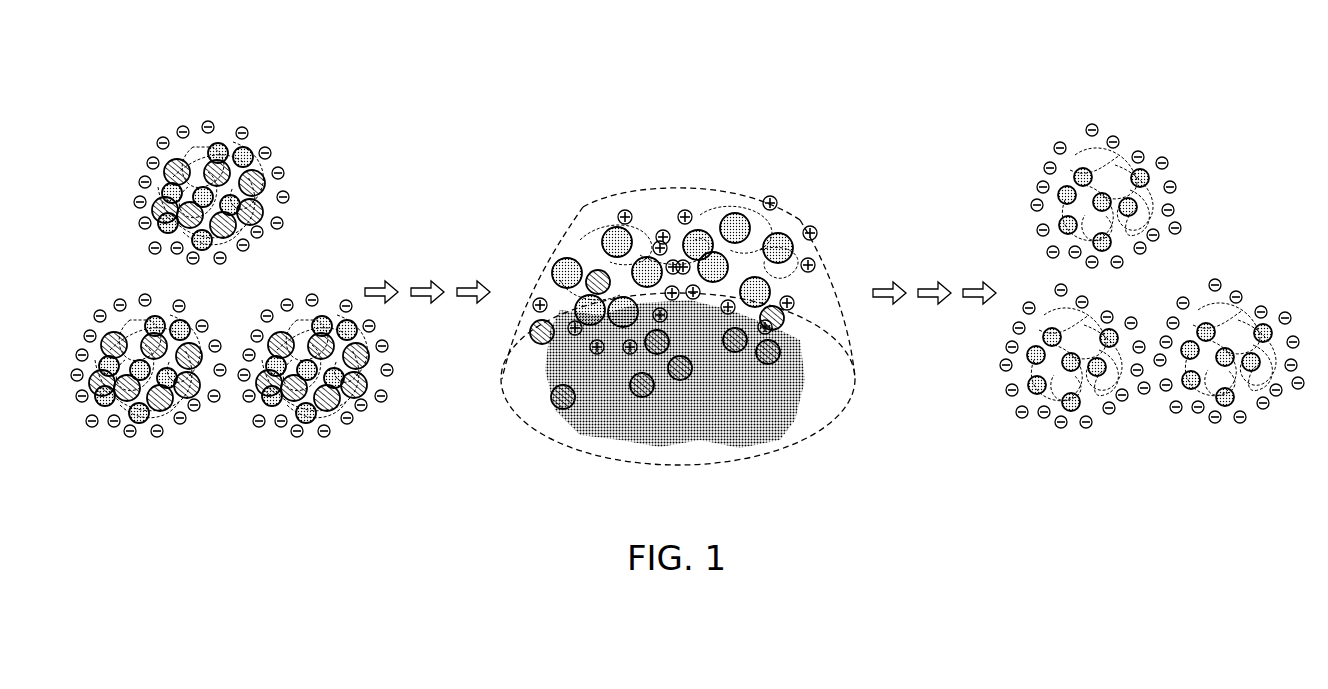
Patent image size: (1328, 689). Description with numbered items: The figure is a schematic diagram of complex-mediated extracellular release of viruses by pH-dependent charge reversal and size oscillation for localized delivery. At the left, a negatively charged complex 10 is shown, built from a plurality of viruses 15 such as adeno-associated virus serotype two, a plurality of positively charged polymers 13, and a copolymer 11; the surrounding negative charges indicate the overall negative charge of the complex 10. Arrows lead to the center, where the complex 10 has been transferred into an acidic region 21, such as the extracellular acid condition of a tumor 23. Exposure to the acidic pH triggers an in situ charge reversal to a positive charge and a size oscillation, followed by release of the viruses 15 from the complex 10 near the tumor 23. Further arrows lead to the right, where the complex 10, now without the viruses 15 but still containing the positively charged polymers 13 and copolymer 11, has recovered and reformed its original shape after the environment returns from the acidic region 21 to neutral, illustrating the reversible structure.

The negatively charged complex 10 is at (248, 103).
The copolymer 11 is at (210, 163).
The positively charged polymer 13 is at (224, 174).
The virus 15 is at (229, 219).
The acidic region 21 is at (672, 190).
The tumor 23 is at (783, 420).